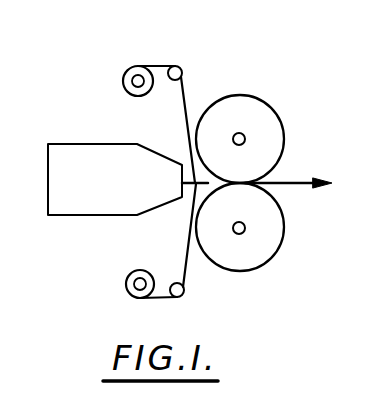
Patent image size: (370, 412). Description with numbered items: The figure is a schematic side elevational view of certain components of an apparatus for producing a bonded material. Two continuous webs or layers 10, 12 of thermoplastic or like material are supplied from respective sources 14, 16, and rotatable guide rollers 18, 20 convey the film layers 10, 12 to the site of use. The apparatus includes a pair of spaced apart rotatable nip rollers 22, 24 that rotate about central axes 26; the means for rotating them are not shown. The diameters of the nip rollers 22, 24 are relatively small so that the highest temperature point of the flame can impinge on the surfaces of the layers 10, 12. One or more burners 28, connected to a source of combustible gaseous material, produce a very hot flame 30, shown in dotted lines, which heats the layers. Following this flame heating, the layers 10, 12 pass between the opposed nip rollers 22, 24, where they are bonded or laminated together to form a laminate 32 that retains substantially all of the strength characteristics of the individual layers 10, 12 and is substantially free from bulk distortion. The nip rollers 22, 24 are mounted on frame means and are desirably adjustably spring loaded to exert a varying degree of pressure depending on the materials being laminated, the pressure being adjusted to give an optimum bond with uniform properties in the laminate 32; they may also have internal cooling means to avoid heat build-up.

The continuous web 10 is at (190, 268).
The continuous web 12 is at (190, 86).
The source 14 is at (135, 275).
The source 16 is at (133, 66).
The rotatable guide roller 18 is at (177, 282).
The rotatable guide roller 20 is at (178, 66).
The nip roller 22 is at (242, 107).
The nip roller 24 is at (265, 240).
The central axis 26 is at (243, 136).
The burner 28 is at (103, 153).
The flame 30 is at (186, 158).
The laminate 32 is at (281, 182).